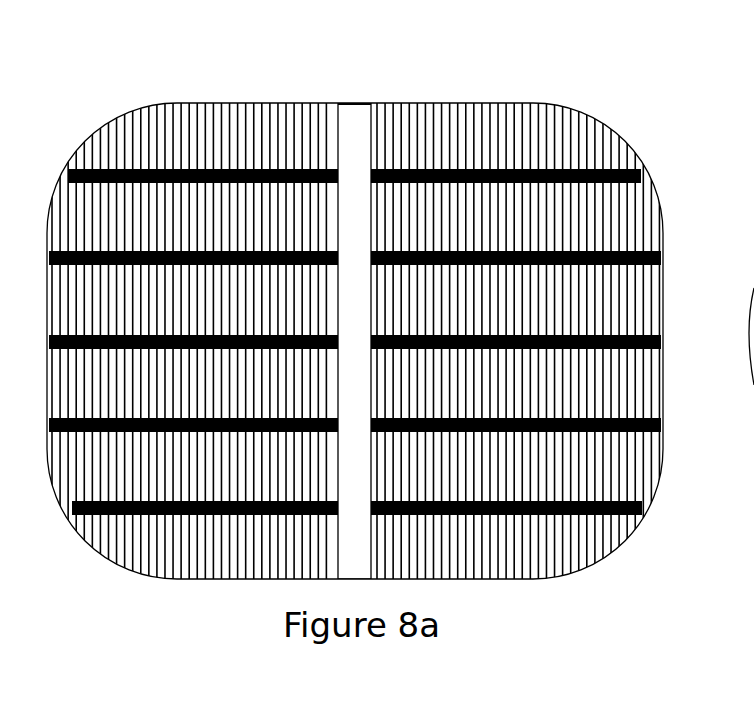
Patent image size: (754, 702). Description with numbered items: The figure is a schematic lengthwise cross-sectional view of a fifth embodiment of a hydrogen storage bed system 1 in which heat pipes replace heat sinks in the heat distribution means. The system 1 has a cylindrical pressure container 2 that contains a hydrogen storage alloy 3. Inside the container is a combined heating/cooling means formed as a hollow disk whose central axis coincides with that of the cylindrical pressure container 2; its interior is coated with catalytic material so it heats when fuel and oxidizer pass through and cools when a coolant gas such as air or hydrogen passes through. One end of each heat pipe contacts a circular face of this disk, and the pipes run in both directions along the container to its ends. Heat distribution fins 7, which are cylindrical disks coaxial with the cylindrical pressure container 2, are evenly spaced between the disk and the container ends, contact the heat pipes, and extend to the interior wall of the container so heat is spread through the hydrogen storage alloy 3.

The hydrogen storage bed system 1 is at (400, 294).
The cylindrical pressure container 2 is at (625, 146).
The hydrogen storage alloy 3 is at (237, 103).
The heat distribution fins 7 is at (175, 104).